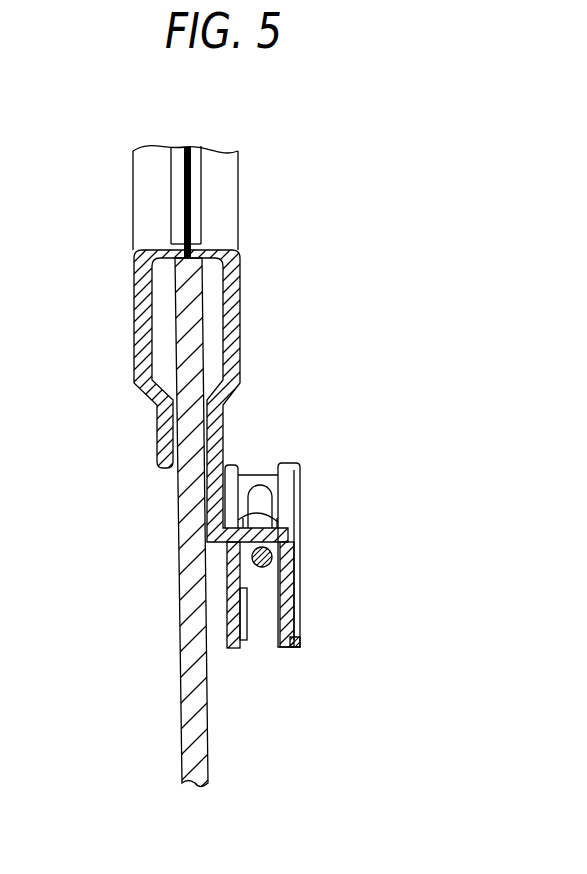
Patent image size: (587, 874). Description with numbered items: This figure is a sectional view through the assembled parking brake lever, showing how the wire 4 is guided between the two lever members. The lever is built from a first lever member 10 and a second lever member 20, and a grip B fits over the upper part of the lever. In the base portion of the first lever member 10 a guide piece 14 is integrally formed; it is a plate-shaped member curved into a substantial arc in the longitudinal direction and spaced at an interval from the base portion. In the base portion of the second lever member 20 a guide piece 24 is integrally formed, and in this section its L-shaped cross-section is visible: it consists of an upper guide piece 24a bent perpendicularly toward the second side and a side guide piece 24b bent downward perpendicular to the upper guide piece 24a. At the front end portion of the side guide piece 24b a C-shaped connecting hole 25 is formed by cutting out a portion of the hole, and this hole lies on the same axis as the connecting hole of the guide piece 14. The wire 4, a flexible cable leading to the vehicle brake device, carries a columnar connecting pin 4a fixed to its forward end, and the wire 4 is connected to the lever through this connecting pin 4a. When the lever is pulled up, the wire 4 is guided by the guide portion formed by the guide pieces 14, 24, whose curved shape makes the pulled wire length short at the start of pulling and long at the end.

The first lever member 10 is at (133, 190).
The second lever member 20 is at (240, 191).
The blade B is at (182, 657).
The wire 4 is at (264, 568).
The connecting pin 4a is at (260, 476).
The guide piece 14 is at (237, 650).
The guide piece 24 is at (300, 575).
The upper guide piece 24a is at (270, 516).
The side guide piece 24b is at (297, 620).
The connecting hole 25 is at (285, 475).